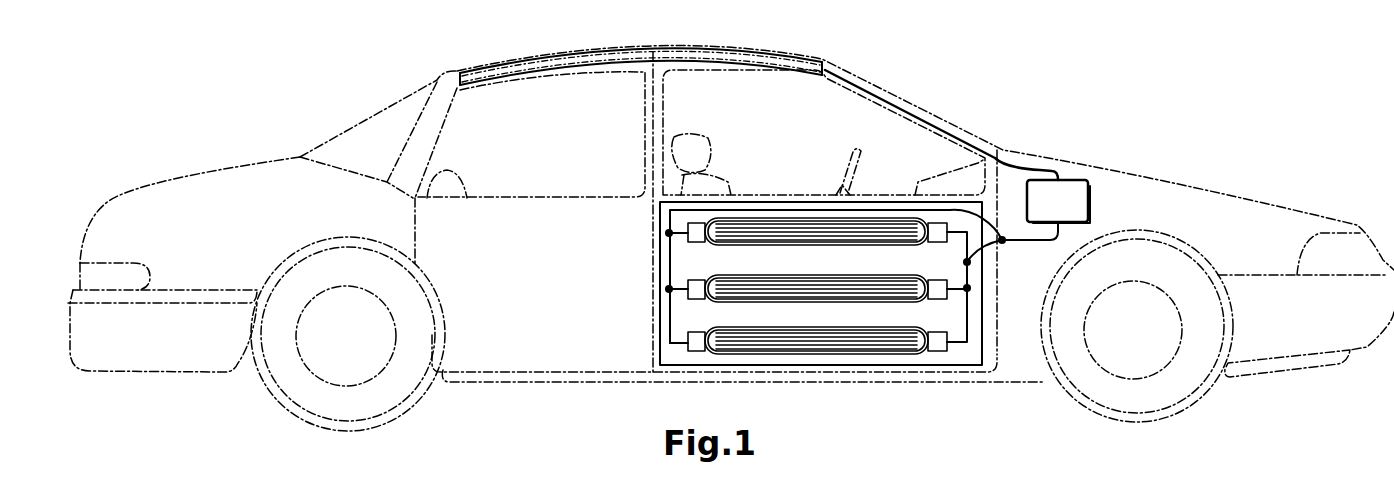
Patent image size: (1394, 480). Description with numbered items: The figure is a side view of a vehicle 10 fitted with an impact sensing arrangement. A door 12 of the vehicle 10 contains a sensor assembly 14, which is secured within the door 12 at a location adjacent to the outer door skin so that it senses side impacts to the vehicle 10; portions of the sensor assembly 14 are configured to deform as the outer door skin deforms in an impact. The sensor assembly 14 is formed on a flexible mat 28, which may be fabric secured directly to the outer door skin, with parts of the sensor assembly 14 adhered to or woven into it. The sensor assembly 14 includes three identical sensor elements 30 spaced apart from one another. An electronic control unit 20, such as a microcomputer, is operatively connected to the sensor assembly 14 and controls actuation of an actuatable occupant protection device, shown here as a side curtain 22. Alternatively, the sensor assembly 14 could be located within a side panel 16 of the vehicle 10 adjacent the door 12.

The vehicle 10 is at (362, 105).
The door 12 is at (984, 371).
The sensor assembly 14 is at (689, 378).
The side panel 16 is at (1015, 280).
The electronic control unit 20 is at (1077, 182).
The side curtain 22 is at (753, 58).
The flexible mat 28 is at (672, 353).
The sensor element 30 is at (741, 253).